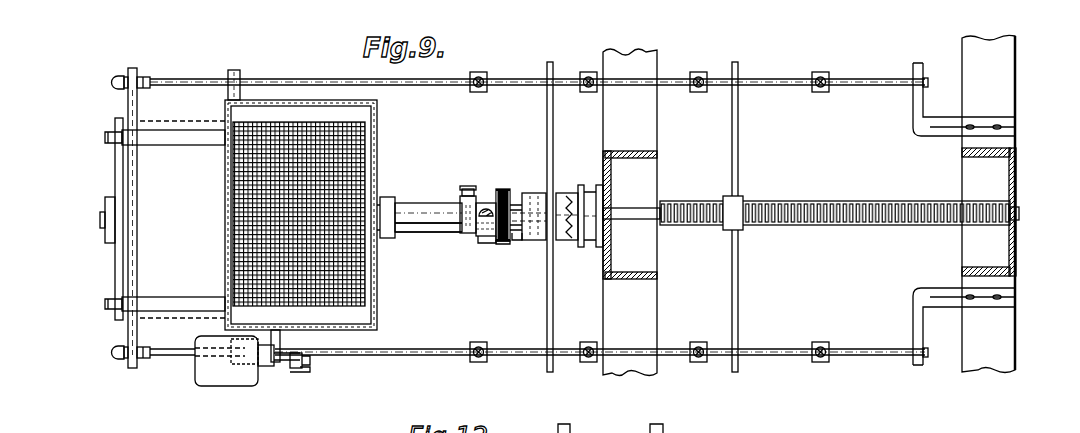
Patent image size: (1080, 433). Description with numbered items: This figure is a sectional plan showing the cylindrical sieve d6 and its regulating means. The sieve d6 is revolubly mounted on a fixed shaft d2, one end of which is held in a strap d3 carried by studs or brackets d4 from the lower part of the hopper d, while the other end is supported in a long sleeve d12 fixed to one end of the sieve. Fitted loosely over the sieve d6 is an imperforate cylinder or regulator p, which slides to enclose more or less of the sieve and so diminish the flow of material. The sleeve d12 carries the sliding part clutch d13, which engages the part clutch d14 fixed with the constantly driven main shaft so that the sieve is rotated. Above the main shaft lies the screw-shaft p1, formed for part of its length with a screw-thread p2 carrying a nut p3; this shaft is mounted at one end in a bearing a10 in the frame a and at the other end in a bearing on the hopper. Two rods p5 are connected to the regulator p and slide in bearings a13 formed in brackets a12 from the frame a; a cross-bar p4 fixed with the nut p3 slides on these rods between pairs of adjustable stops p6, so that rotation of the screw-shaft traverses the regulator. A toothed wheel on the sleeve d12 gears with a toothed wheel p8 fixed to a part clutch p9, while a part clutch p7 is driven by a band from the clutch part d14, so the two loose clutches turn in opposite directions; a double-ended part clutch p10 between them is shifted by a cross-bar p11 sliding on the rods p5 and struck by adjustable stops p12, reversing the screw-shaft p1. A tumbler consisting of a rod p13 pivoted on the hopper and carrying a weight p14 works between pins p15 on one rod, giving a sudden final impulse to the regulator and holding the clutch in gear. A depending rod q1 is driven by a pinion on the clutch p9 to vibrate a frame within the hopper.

The rods p5 is at (413, 86).
The imperforate cylinder or regulator p is at (128, 318).
The strap d3 is at (115, 262).
The fixed shaft d2 is at (104, 225).
The studs or brackets d4 is at (165, 145).
The hopper d is at (225, 200).
The cylindrical sieve d6 is at (365, 255).
The screw-shaft p1 is at (432, 209).
The sleeve d12 is at (418, 234).
The depending rod q1 is at (472, 196).
The movable part of clutch d13 is at (524, 195).
The toothed wheel p8 is at (492, 243).
The part clutch p9 is at (503, 244).
The double-ended part clutch p10 is at (525, 241).
The strap or cross-bar p11 is at (553, 110).
The fixed part of clutch d14 is at (566, 193).
The part clutch p7 is at (581, 248).
The adjustable stop p12 is at (588, 72).
The adjustable stop p6 is at (822, 92).
The strap or cross-bar p4 is at (738, 110).
The frame a is at (657, 297).
The bearing a10 is at (1017, 230).
The brackets a12 is at (913, 132).
The bearings a13 is at (912, 90).
The screw-thread p2 is at (865, 203).
The nut p3 is at (724, 198).
The weight p14 is at (218, 386).
The pins p15 is at (266, 370).
The tumbler-rod p13 is at (288, 368).